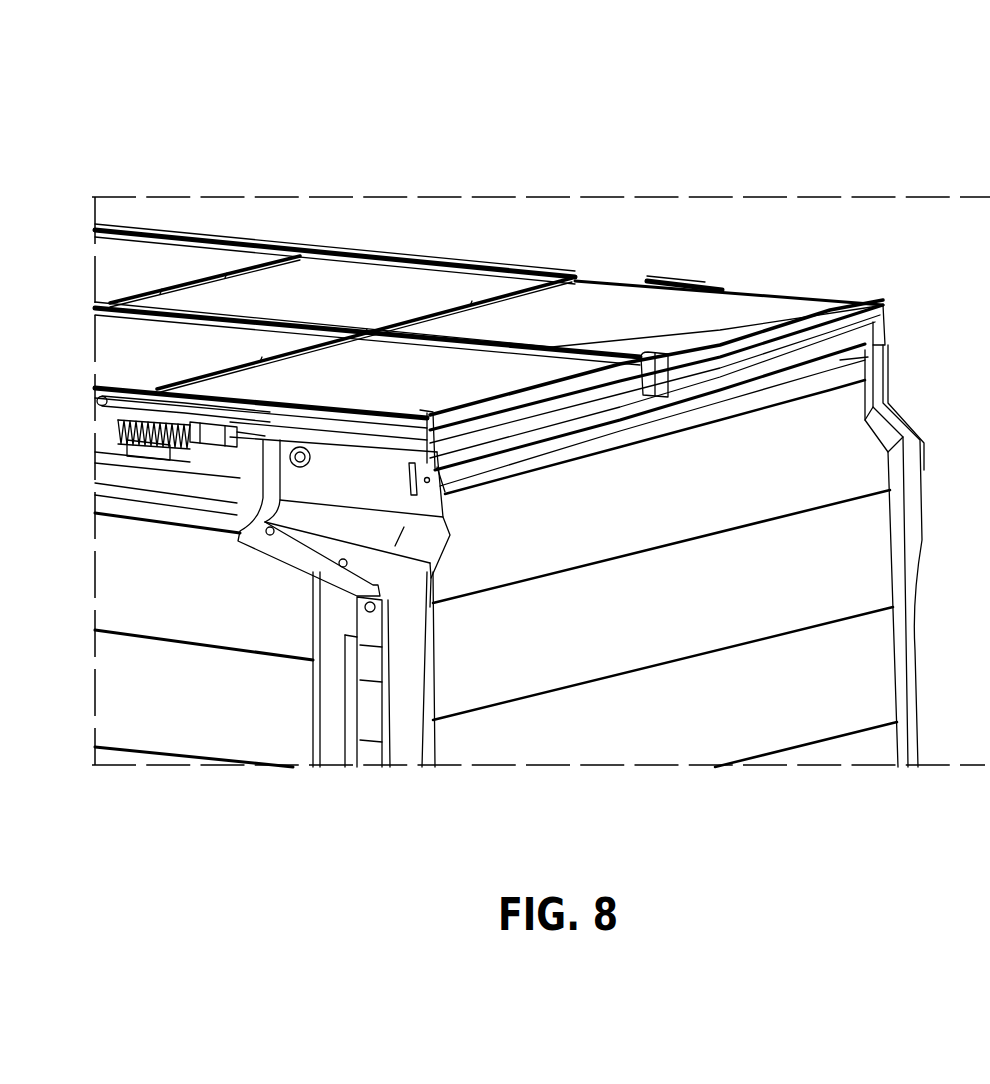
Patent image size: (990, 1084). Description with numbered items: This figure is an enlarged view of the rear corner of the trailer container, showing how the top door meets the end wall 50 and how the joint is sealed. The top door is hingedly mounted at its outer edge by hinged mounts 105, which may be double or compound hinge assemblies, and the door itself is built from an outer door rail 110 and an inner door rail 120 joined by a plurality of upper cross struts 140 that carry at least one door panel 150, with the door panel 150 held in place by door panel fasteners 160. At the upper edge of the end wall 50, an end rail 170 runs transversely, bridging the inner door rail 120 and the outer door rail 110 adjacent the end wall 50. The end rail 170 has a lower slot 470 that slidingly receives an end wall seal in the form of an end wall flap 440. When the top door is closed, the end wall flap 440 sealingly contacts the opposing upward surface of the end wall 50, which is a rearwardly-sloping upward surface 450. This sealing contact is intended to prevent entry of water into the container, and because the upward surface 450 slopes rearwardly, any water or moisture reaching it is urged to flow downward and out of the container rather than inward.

The end wall 50 is at (740, 600).
The hinged mounts 105 is at (166, 455).
The outer door rail 110 is at (307, 407).
The inner door rail 120 is at (552, 347).
The upper cross struts 140 is at (470, 300).
The door panel 150 is at (343, 293).
The door panel fasteners 160 is at (172, 290).
The end rail 170 is at (887, 345).
The end wall flap 440 is at (540, 420).
The rearwardly-sloping upward surface 450 is at (497, 450).
The lower slot 470 is at (399, 407).